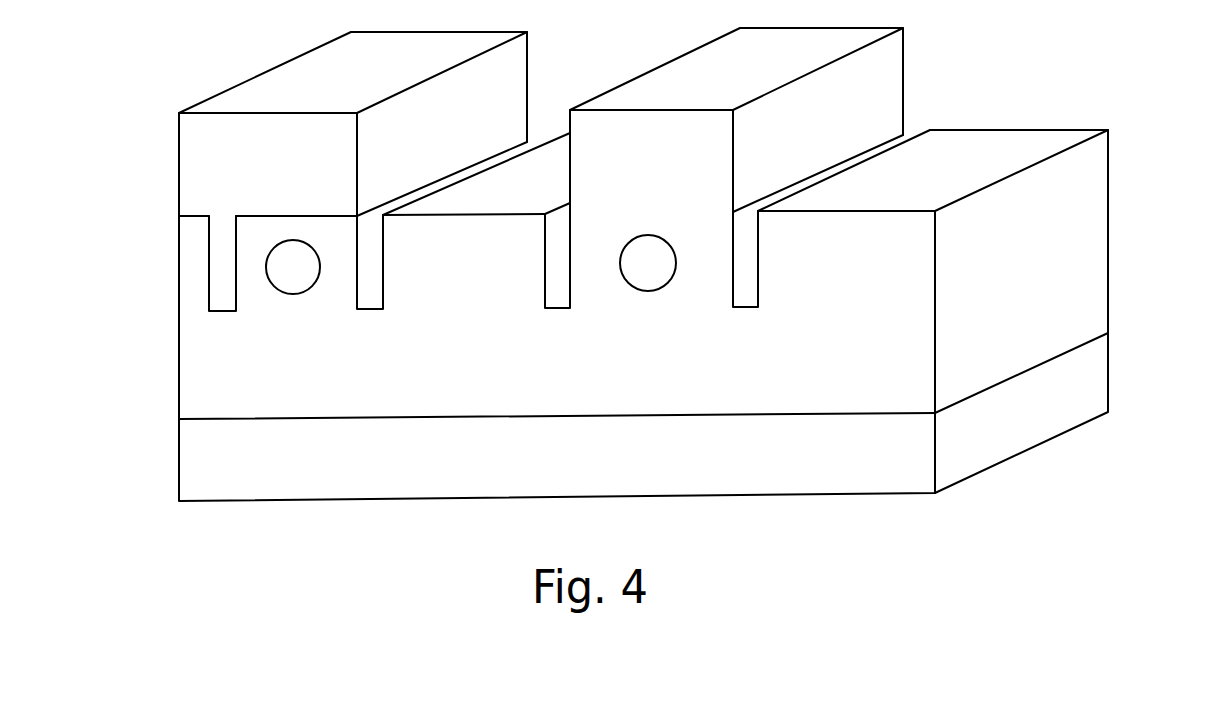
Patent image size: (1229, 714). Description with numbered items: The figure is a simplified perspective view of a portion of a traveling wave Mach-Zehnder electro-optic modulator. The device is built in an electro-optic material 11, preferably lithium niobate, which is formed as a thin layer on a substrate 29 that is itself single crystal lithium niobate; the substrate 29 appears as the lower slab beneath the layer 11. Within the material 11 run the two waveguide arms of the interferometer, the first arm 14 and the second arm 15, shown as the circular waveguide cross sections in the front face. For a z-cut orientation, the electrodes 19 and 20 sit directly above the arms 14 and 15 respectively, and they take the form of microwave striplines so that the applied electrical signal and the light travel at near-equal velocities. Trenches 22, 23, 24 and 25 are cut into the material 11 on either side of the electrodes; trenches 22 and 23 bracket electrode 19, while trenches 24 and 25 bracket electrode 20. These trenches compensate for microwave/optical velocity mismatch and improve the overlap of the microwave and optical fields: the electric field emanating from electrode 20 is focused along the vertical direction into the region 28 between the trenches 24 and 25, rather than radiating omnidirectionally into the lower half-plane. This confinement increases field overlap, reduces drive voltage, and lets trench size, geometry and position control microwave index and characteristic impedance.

The electro-optic material 11 is at (189, 316).
The first arm 14 is at (277, 269).
The second arm 15 is at (650, 269).
The electrode 19 is at (198, 159).
The electrode 20 is at (865, 85).
The trench 22 is at (220, 246).
The trench 23 is at (372, 273).
The trench 24 is at (557, 282).
The trench 25 is at (747, 229).
The region between the trenches 28 is at (552, 153).
The substrate 29 is at (1043, 398).